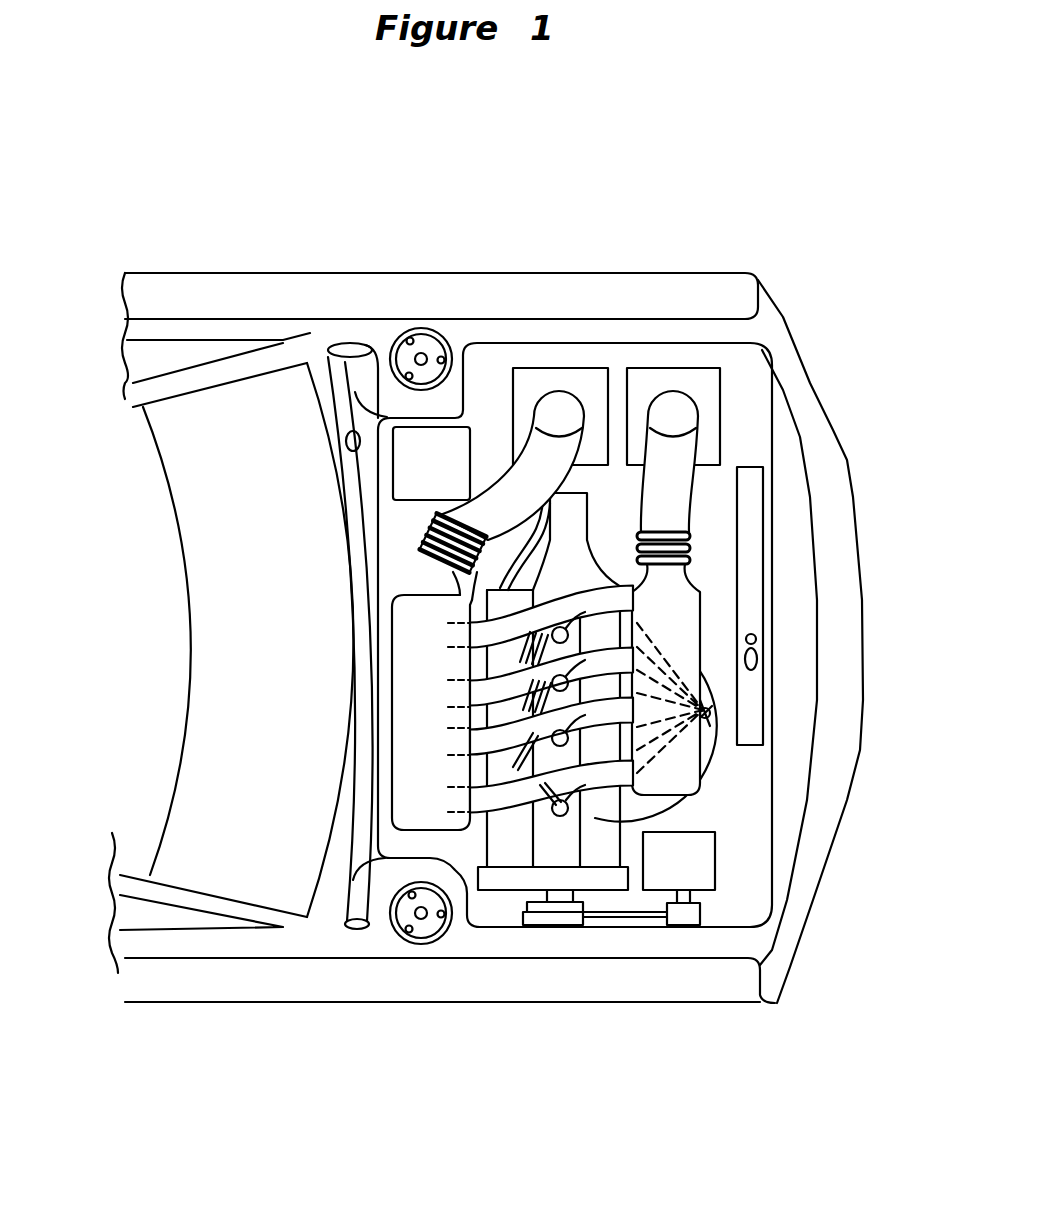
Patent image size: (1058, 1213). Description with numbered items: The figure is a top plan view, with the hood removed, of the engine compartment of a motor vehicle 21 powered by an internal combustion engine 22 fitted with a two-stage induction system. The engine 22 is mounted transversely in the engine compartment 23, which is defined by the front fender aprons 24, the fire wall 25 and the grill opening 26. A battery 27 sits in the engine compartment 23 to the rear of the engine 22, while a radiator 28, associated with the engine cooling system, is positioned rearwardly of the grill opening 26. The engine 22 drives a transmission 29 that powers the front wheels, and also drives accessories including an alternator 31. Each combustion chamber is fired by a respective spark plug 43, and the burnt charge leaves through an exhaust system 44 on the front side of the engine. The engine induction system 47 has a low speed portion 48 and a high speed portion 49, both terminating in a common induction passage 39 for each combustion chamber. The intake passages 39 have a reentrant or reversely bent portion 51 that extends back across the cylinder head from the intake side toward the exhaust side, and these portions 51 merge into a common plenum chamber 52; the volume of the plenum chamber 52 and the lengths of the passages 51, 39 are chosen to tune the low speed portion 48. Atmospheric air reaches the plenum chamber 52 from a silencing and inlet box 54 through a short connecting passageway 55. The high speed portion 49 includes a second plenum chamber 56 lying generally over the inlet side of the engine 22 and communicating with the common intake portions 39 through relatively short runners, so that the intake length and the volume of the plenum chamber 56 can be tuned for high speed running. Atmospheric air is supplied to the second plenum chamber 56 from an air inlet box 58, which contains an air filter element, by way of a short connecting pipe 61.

The motor vehicle 21 is at (147, 1015).
The internal combustion engine 22 is at (497, 855).
The engine compartment 23 is at (752, 835).
The front fender aprons 24 is at (330, 349).
The fire wall 25 is at (347, 436).
The grill opening 26 is at (776, 390).
The battery 27 is at (437, 437).
The radiator 28 is at (747, 512).
The transmission 29 is at (585, 538).
The alternator 31 is at (700, 867).
The induction passage 39 is at (470, 628).
The spark plug 43 is at (597, 838).
The exhaust system 44 is at (716, 757).
The engine induction system 47 is at (392, 698).
The low speed portion 48 is at (722, 618).
The high speed portion 49 is at (392, 782).
The reentrant portion 51 is at (560, 598).
The plenum chamber 52 is at (687, 600).
The silencing and inlet box 54 is at (708, 382).
The connecting passageway 55 is at (687, 482).
The second plenum chamber 56 is at (392, 605).
The air inlet box 58 is at (560, 380).
The connecting pipe 61 is at (522, 500).